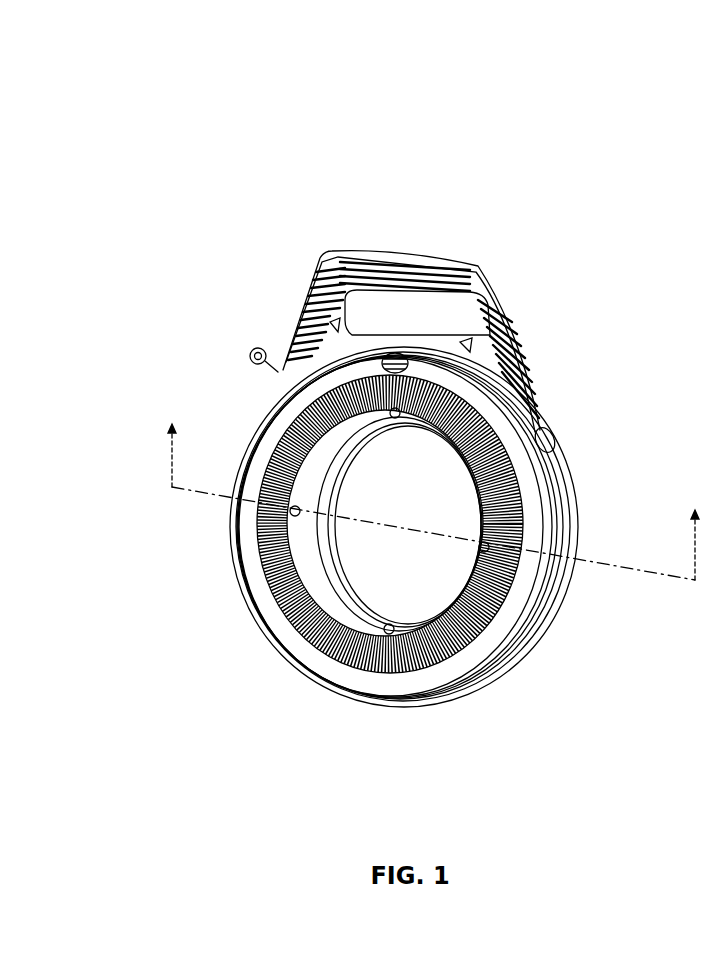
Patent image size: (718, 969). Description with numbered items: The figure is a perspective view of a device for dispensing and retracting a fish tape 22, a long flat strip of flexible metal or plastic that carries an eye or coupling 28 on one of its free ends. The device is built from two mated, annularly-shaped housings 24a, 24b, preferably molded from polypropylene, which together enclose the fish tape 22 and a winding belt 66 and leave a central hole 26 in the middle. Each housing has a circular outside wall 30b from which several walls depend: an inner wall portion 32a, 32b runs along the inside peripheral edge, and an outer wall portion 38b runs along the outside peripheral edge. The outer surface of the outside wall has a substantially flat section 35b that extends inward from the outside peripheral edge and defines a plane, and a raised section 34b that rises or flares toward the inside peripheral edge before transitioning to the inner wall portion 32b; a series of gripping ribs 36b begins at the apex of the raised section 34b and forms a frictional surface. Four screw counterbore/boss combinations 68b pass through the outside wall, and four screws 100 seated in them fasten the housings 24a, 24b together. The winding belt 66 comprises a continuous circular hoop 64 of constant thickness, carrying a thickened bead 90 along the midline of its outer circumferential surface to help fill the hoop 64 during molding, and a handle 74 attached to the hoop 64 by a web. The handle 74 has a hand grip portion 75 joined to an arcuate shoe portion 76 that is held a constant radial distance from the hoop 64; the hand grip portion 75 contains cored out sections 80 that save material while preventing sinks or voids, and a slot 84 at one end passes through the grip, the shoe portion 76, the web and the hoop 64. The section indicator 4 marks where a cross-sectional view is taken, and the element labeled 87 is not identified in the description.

The fish tape 22 is at (393, 352).
The housing 24a is at (563, 618).
The housing 24b is at (465, 693).
The central hole 26 is at (445, 511).
The eye or coupling 28 is at (250, 353).
The circular outside wall 30b is at (512, 634).
The inner wall portion 32a is at (330, 537).
The inner wall portion 32b is at (334, 578).
The raised section 34b is at (303, 470).
The flat section 35b is at (502, 432).
The gripping ribs 36b is at (297, 620).
The outer wall portion 38b is at (573, 550).
The continuous circular hoop 64 is at (567, 487).
The winding belt 66 is at (527, 355).
The screw counterbore/boss combinations 68b is at (293, 513).
The handle 74 is at (492, 280).
The hand grip portion 75 is at (452, 268).
The arcuate shoe portion 76 is at (554, 440).
The cored out sections 80 is at (420, 228).
The slot 84 is at (277, 371).
The top vent slats 87 is at (397, 260).
The thickened bead 90 is at (565, 528).
The screws 100 is at (413, 392).
The section line 4- 4 is at (433, 488).